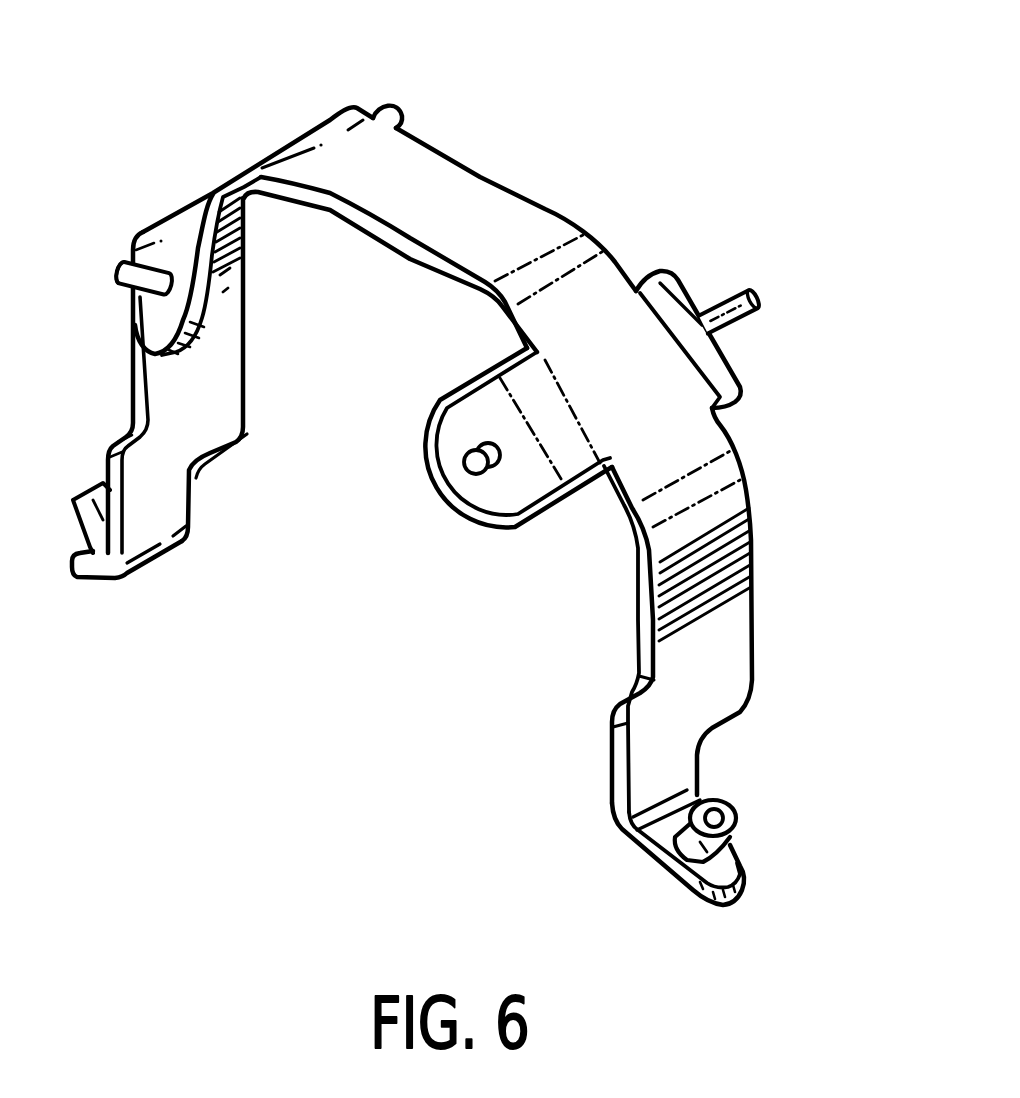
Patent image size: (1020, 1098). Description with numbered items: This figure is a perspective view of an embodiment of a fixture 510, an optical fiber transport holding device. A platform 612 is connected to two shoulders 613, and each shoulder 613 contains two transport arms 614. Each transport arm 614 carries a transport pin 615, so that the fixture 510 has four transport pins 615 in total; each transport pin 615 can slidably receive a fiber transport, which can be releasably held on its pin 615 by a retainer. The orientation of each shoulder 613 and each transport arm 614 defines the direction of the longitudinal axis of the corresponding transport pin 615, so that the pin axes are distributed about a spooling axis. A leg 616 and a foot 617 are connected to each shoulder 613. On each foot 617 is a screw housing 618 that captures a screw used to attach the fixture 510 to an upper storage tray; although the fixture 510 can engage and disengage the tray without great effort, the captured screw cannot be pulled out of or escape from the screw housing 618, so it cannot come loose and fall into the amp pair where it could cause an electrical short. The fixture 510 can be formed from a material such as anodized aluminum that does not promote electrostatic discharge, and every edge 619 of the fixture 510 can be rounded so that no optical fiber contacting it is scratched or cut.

The fixture 510 is at (603, 189).
The platform 612 is at (508, 146).
The shoulder 613 is at (619, 318).
The transport arm 614 is at (448, 440).
The transport pin 615 is at (747, 326).
The leg 616 is at (755, 548).
The foot 617 is at (742, 865).
The screw housing 618 is at (727, 803).
The edge 619 is at (637, 683).